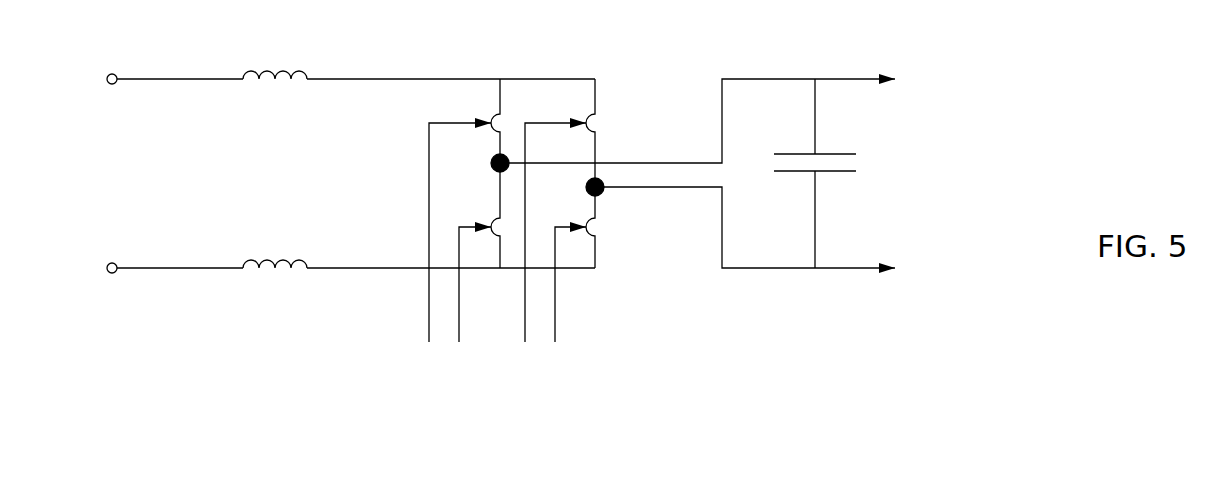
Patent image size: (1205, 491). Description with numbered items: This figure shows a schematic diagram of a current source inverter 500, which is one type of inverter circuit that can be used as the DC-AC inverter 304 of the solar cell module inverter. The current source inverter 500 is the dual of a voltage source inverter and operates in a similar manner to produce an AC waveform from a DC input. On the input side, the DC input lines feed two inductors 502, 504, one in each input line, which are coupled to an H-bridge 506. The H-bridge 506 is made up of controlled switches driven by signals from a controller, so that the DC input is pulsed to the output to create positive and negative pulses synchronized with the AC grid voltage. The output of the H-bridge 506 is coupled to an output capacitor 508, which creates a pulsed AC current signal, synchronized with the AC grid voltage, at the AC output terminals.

The current source inverter 500 is at (960, 52).
The DC-AC inverter 304 is at (140, 347).
The inductor 502 is at (268, 92).
The inductor 504 is at (268, 282).
The H-bridge 506 is at (583, 285).
The output capacitor 508 is at (843, 185).